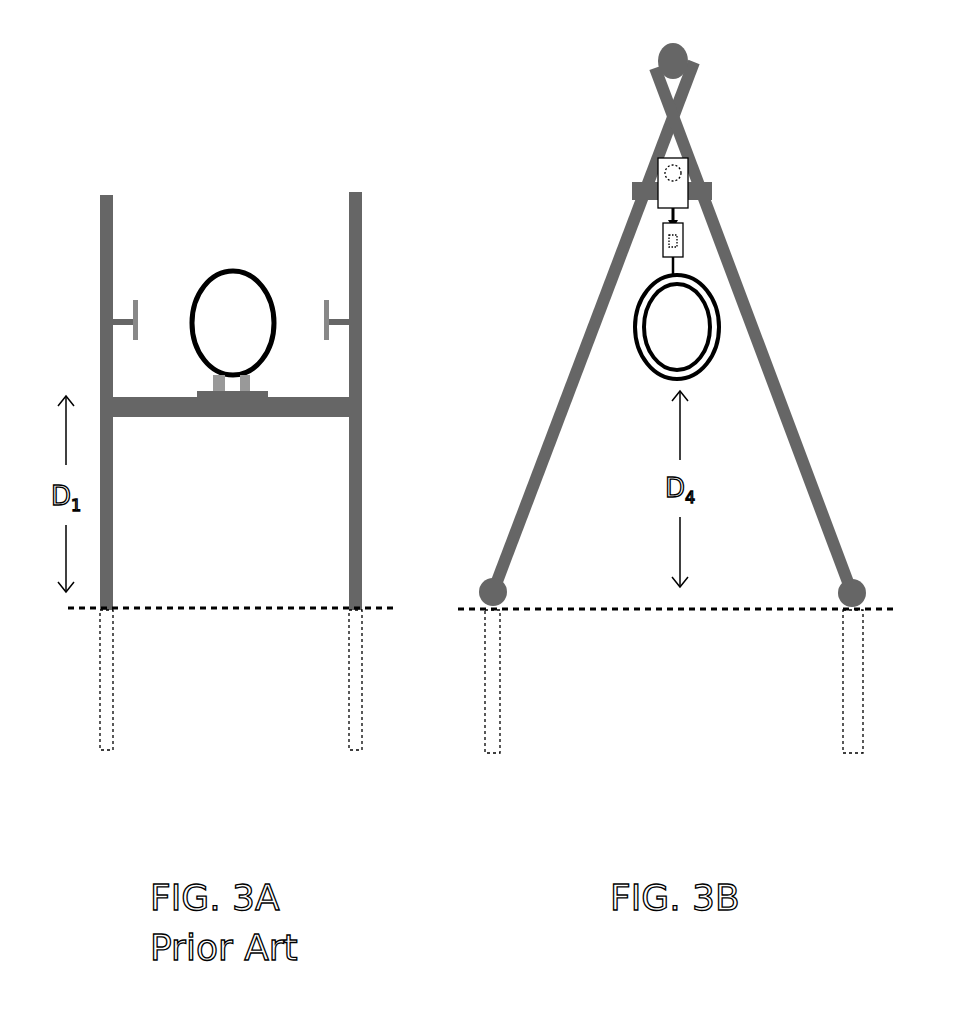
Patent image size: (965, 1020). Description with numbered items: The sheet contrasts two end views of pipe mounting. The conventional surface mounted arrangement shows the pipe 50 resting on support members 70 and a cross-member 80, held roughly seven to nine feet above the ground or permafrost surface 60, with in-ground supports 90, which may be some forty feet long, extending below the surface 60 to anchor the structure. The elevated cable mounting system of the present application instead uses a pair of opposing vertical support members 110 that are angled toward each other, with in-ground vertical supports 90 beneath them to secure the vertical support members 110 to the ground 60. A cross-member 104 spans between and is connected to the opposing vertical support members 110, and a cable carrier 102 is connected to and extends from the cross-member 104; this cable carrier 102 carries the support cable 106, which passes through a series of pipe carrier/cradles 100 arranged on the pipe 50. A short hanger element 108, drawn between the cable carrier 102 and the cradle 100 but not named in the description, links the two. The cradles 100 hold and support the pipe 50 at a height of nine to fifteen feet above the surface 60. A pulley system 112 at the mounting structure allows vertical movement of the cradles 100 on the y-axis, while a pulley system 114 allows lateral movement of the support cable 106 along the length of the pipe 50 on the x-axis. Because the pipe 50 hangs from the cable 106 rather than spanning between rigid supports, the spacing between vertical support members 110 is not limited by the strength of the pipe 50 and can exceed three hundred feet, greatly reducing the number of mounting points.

In FIG. 3A, the pipe 50 is at (215, 270).
In FIG. 3B, the pipe 50 is at (690, 350).
In FIG. 3A, the ground or permafrost surface 60 is at (373, 615).
In FIG. 3B, the ground or permafrost surface 60 is at (885, 615).
In FIG. 3A, the support member 70 is at (120, 310).
In FIG. 3A, the cross-member 80 is at (230, 398).
In FIG. 3A, the in-ground support 90 is at (337, 717).
In FIG. 3B, the in-ground support 90 is at (513, 710).
In FIG. 3B, the pipe carrier/cradle 100 is at (647, 358).
In FIG. 3B, the cable carrier 102 is at (683, 237).
In FIG. 3B, the cross-member 104 is at (648, 187).
In FIG. 3B, the support cable 106 is at (671, 227).
In FIG. 3B, the hanger rod 108 is at (663, 267).
In FIG. 3B, the vertical support member 110 is at (613, 257).
In FIG. 3B, the pulley system 112 is at (692, 173).
In FIG. 3B, the pulley system 114 is at (680, 243).